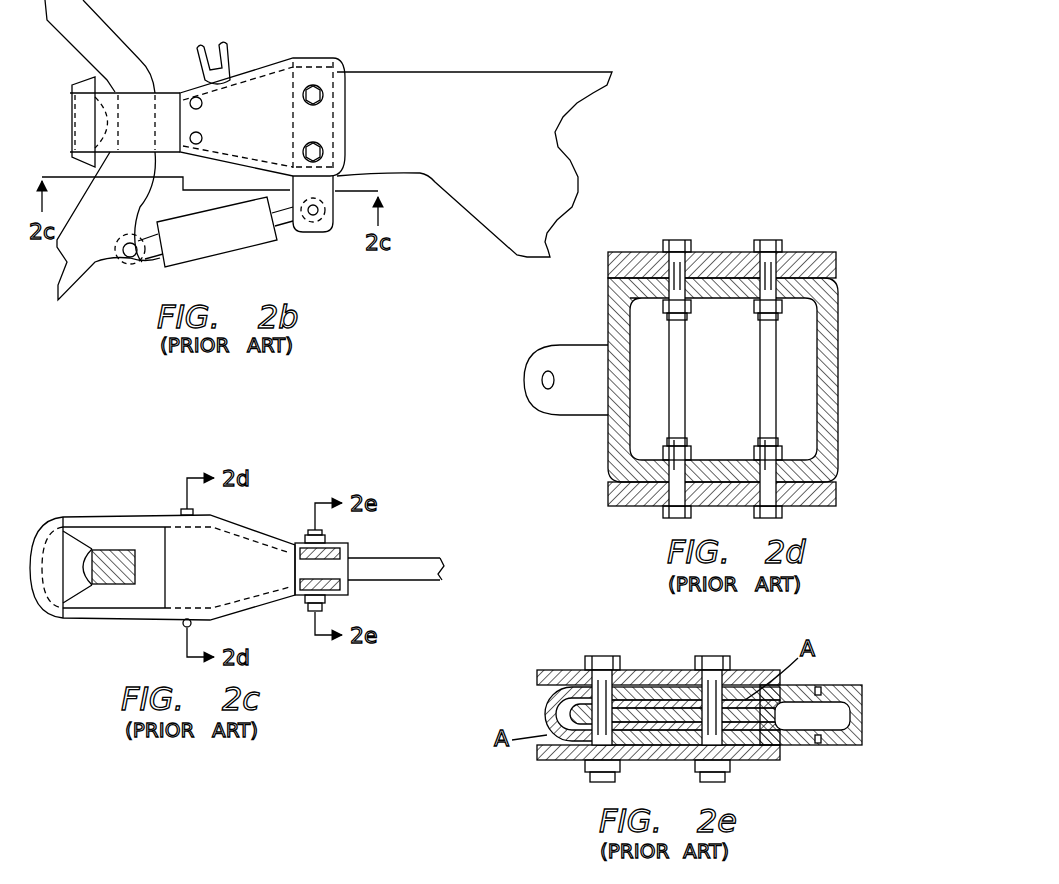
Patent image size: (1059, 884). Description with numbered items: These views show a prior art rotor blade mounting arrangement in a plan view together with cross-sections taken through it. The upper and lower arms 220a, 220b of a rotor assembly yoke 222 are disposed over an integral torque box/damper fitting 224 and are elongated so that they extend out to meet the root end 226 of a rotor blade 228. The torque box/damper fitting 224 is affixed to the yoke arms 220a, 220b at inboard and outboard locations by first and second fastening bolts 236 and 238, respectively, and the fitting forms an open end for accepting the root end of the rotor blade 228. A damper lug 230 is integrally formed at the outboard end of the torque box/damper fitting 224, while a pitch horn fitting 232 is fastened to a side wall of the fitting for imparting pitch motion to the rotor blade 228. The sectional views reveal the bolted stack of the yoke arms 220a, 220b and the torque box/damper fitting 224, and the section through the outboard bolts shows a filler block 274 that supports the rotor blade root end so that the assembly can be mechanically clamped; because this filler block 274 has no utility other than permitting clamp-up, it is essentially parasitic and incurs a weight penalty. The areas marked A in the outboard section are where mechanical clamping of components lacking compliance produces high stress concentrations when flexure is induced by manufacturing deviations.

In FIG. 2B, the upper arm 220a is at (278, 80).
In FIG. 2C, the upper arm 220a is at (258, 530).
In FIG. 2D, the upper arm 220a is at (812, 258).
In FIG. 2E, the upper arm 220a is at (740, 674).
In FIG. 2C, the lower arm 220b is at (262, 602).
In FIG. 2D, the lower arm 220b is at (815, 505).
In FIG. 2E, the lower arm 220b is at (756, 760).
In FIG. 2B, the rotor assembly yoke 222 is at (173, 93).
In FIG. 2C, the torque box/damper fitting 224 is at (232, 582).
In FIG. 2D, the torque box/damper fitting 224 is at (822, 360).
In FIG. 2E, the torque box/damper fitting 224 is at (545, 702).
In FIG. 2B, the root end 226 is at (346, 82).
In FIG. 2C, the root end 226 is at (352, 567).
In FIG. 2B, the rotor blade 228 is at (516, 152).
In FIG. 2B, the damper lug 230 is at (332, 232).
In FIG. 2C, the damper lug 230 is at (350, 585).
In FIG. 2E, the damper lug 230 is at (822, 690).
In FIG. 2B, the pitch horn fitting 232 is at (232, 60).
In FIG. 2D, the pitch horn fitting 232 is at (572, 405).
In FIG. 2B, the first fastening bolts 236 is at (203, 136).
In FIG. 2C, the first fastening bolts 236 is at (183, 509).
In FIG. 2D, the first fastening bolts 236 is at (752, 247).
In FIG. 2B, the second fastening bolts 238 is at (320, 148).
In FIG. 2C, the second fastening bolts 238 is at (325, 605).
In FIG. 2E, the second fastening bolts 238 is at (700, 664).
In FIG. 2E, the filler block 274 is at (566, 690).